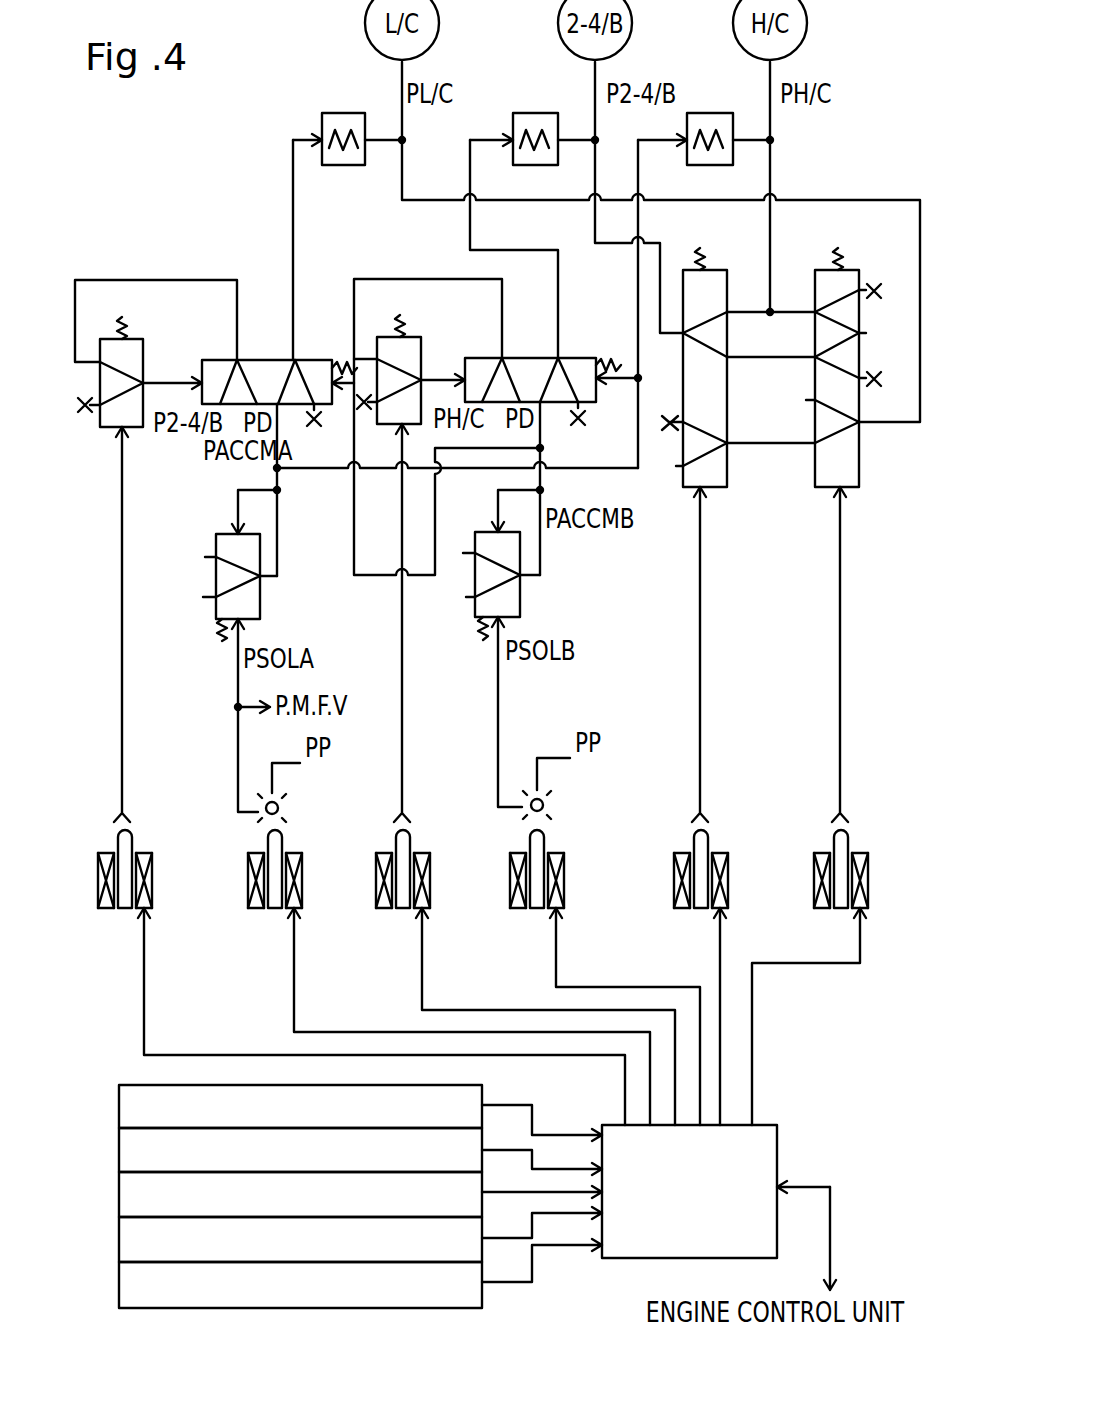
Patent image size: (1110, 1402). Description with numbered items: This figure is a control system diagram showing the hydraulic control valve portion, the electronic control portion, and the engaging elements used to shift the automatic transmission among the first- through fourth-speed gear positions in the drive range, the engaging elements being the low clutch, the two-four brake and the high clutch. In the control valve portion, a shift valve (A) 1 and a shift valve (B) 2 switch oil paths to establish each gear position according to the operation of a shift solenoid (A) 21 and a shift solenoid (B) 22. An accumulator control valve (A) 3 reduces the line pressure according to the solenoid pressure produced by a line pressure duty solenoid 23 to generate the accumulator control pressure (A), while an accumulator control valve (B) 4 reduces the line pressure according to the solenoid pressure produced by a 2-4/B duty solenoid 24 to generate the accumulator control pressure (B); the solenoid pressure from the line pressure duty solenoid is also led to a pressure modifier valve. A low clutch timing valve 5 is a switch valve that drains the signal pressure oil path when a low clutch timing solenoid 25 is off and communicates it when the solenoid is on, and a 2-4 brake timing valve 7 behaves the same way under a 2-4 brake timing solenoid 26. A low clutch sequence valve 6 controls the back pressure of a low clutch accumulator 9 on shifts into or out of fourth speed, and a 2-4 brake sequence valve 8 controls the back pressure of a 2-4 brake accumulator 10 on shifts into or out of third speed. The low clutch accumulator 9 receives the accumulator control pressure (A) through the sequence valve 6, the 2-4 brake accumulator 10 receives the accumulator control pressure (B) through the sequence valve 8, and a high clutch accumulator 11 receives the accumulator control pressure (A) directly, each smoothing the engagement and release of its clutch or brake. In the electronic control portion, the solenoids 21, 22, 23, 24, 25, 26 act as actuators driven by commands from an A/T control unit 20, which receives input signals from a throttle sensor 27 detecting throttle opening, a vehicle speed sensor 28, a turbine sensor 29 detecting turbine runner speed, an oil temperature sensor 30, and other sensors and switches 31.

The shift valve (A) 1 is at (722, 270).
The shift valve (B) 2 is at (856, 270).
The accumulator control valve (A) 3 is at (262, 598).
The accumulator control valve (B) 4 is at (522, 596).
The low clutch timing valve 5 is at (146, 357).
The low clutch sequence valve 6 is at (305, 360).
The 2-4 brake timing valve 7 is at (424, 350).
The 2-4 brake sequence valve 8 is at (577, 358).
The low clutch accumulator 9 is at (330, 113).
The 2-4 brake accumulator 10 is at (523, 113).
The high clutch accumulator 11 is at (697, 113).
The A/T control unit 20 is at (777, 1152).
The shift solenoid (A) 21 is at (724, 853).
The shift solenoid (B) 22 is at (864, 853).
The line pressure duty solenoid 23 is at (298, 853).
The 2-4/B duty solenoid 24 is at (560, 853).
The low clutch timing solenoid 25 is at (146, 853).
The 2-4 brake timing solenoid 26 is at (424, 853).
The throttle sensor 27 is at (119, 1112).
The vehicle speed sensor 28 is at (119, 1157).
The turbine sensor 29 is at (119, 1202).
The oil temperature sensor 30 is at (119, 1246).
The other sensors and switches 31 is at (119, 1290).